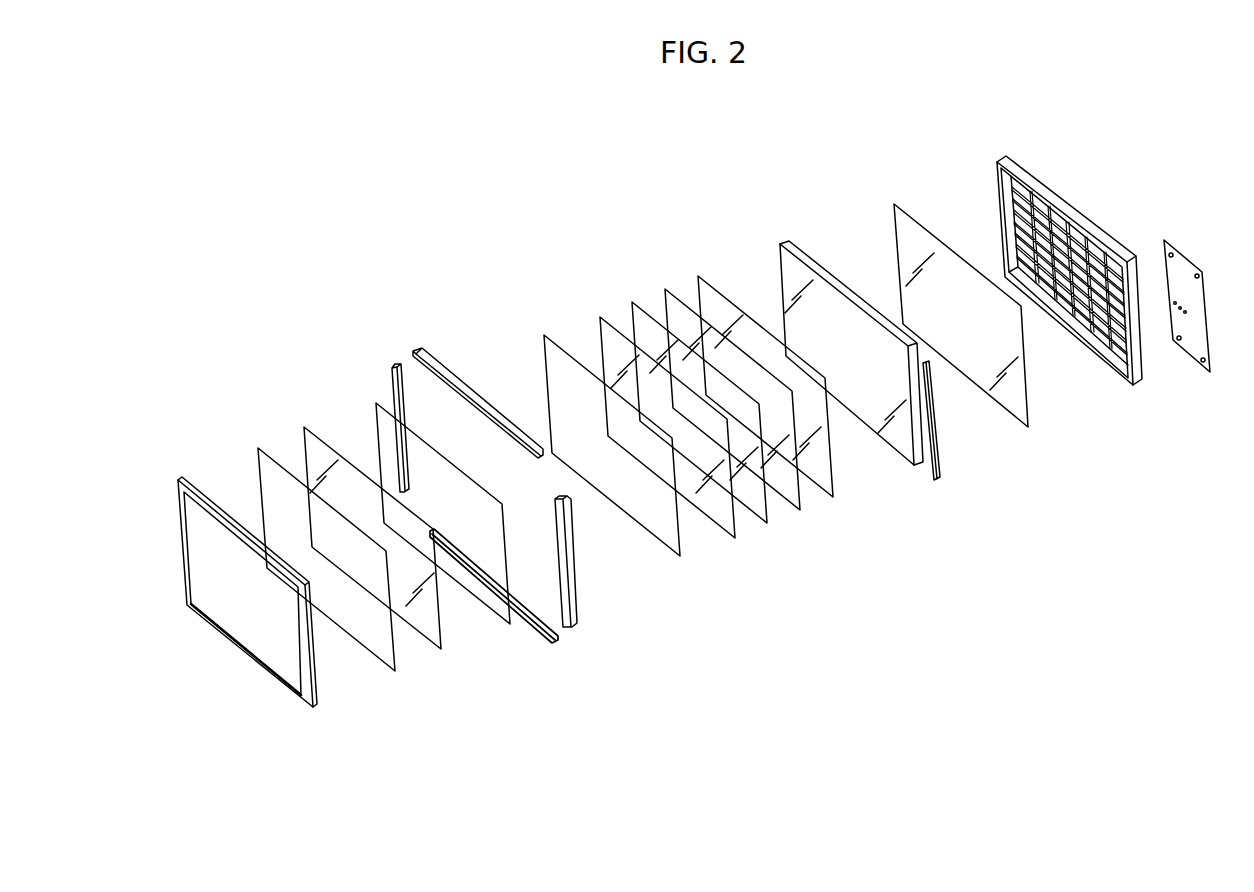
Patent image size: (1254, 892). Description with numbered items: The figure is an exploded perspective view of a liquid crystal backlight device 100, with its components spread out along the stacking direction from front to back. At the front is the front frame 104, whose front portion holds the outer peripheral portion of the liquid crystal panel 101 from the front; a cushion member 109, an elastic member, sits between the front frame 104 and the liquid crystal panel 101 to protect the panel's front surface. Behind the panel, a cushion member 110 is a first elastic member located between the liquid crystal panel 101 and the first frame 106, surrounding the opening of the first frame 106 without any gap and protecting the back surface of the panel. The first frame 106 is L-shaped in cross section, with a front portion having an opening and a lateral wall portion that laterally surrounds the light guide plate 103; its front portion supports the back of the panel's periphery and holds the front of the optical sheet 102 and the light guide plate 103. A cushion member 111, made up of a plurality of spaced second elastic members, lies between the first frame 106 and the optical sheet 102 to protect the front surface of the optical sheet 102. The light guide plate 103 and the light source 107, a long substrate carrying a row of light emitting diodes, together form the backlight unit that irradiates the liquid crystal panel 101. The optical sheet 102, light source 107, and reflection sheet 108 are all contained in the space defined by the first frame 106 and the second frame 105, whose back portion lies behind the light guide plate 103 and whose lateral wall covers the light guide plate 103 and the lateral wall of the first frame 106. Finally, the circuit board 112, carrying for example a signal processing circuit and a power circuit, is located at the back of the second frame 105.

The liquid crystal backlight device 100 is at (522, 240).
The liquid crystal panel 101 is at (422, 640).
The optical sheet 102 is at (843, 496).
The light guide plate 103 is at (898, 455).
The front frame 104 is at (305, 703).
The second frame 105 is at (1137, 377).
The first frame 106 is at (577, 622).
The light source 107 is at (937, 470).
The reflection sheet 108 is at (1010, 400).
The cushion member 109 is at (379, 662).
The cushion member 110 is at (492, 617).
The cushion member 111 is at (667, 550).
The circuit board 112 is at (1193, 357).